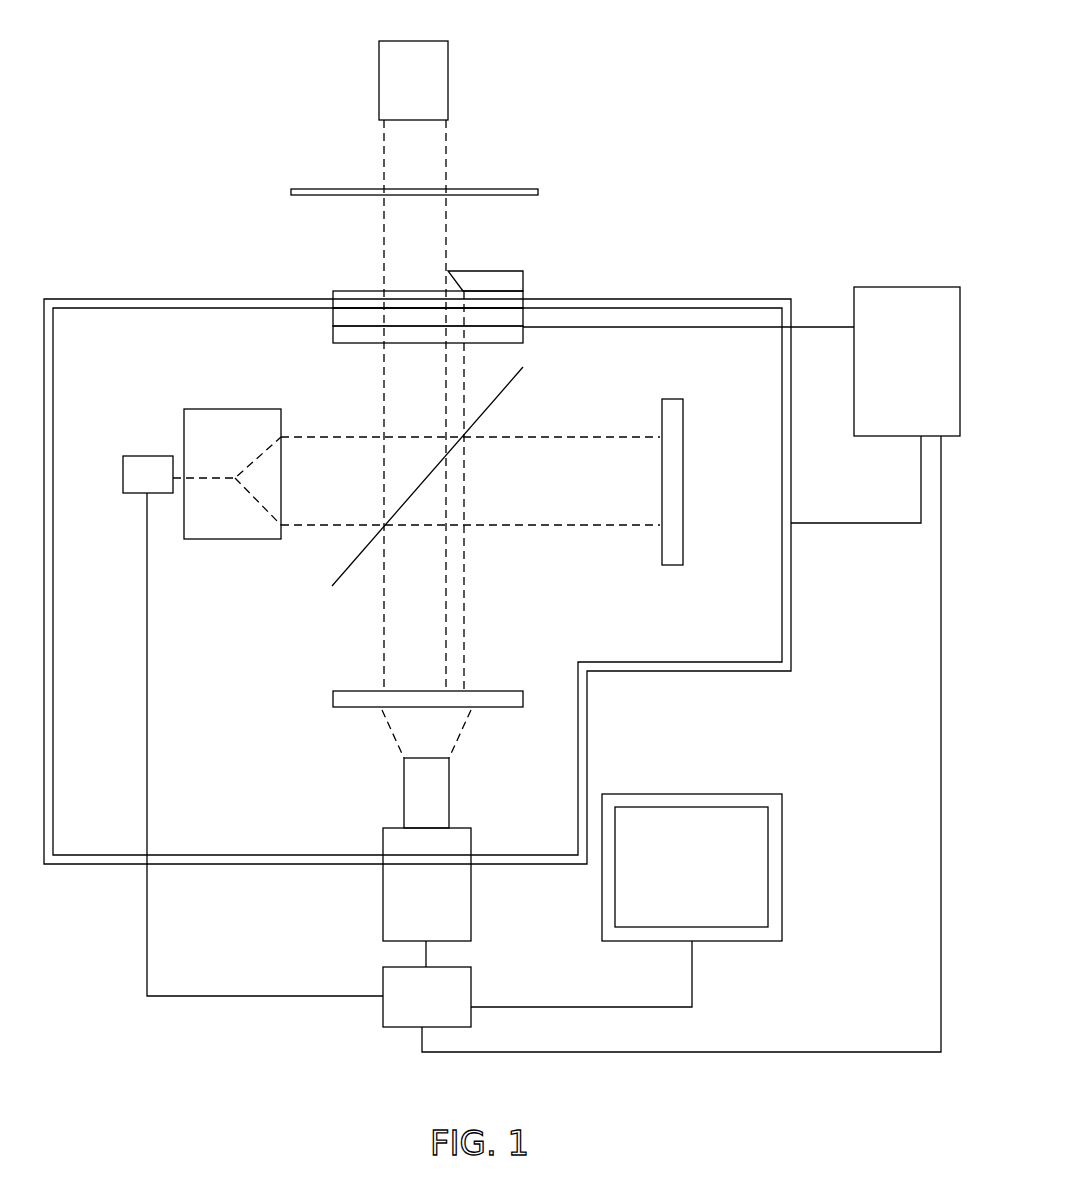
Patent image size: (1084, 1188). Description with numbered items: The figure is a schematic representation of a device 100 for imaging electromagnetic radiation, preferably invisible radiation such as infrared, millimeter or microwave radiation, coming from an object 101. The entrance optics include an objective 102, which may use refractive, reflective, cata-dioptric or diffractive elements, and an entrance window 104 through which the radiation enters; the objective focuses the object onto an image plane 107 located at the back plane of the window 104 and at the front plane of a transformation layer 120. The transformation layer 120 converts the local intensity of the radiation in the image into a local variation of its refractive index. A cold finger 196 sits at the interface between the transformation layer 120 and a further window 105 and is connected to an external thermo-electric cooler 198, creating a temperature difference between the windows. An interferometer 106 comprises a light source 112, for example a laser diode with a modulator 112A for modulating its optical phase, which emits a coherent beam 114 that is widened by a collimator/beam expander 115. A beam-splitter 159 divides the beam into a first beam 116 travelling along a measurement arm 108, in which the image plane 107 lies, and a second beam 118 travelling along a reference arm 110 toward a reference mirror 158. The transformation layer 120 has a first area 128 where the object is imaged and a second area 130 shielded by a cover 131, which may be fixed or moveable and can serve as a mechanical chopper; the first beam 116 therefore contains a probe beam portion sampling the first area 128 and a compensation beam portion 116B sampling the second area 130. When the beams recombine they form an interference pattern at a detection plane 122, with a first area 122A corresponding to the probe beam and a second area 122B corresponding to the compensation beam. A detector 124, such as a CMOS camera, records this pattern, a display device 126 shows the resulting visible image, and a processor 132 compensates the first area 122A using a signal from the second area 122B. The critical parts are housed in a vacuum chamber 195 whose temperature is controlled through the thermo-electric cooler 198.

The device 100 is at (205, 112).
The object 101 is at (378, 68).
The objective 102 is at (289, 193).
The entrance window 104 is at (399, 260).
The window 105 is at (428, 334).
The interferometer 106 is at (517, 468).
The image plane 107 is at (428, 317).
The measurement arm 108 is at (382, 416).
The reference arm 110 is at (594, 430).
The light source 112 is at (221, 694).
The modulator 112A is at (115, 467).
The coherent beam of light 114 is at (182, 473).
The collimator/beam expander 115 is at (223, 404).
The first beam 116 is at (346, 405).
The compensation beam portion 116B is at (458, 352).
The second beam 118 is at (608, 530).
The transformation layer 120 is at (428, 299).
The detection plane 122 is at (427, 679).
The first area of detection plane 122A is at (415, 682).
The second area of detection plane 122B is at (457, 683).
The detector 124 is at (407, 893).
The display device 126 is at (647, 835).
The first area 128 is at (404, 302).
The second area 130 is at (497, 302).
The cover 131 is at (485, 281).
The processor 132 is at (453, 992).
The reference mirror 158 is at (675, 480).
The beam-splitter 159 is at (343, 592).
The vacuum chamber 195 is at (733, 296).
The cold finger 196 is at (501, 322).
The thermo-electric cooler 198 is at (903, 318).